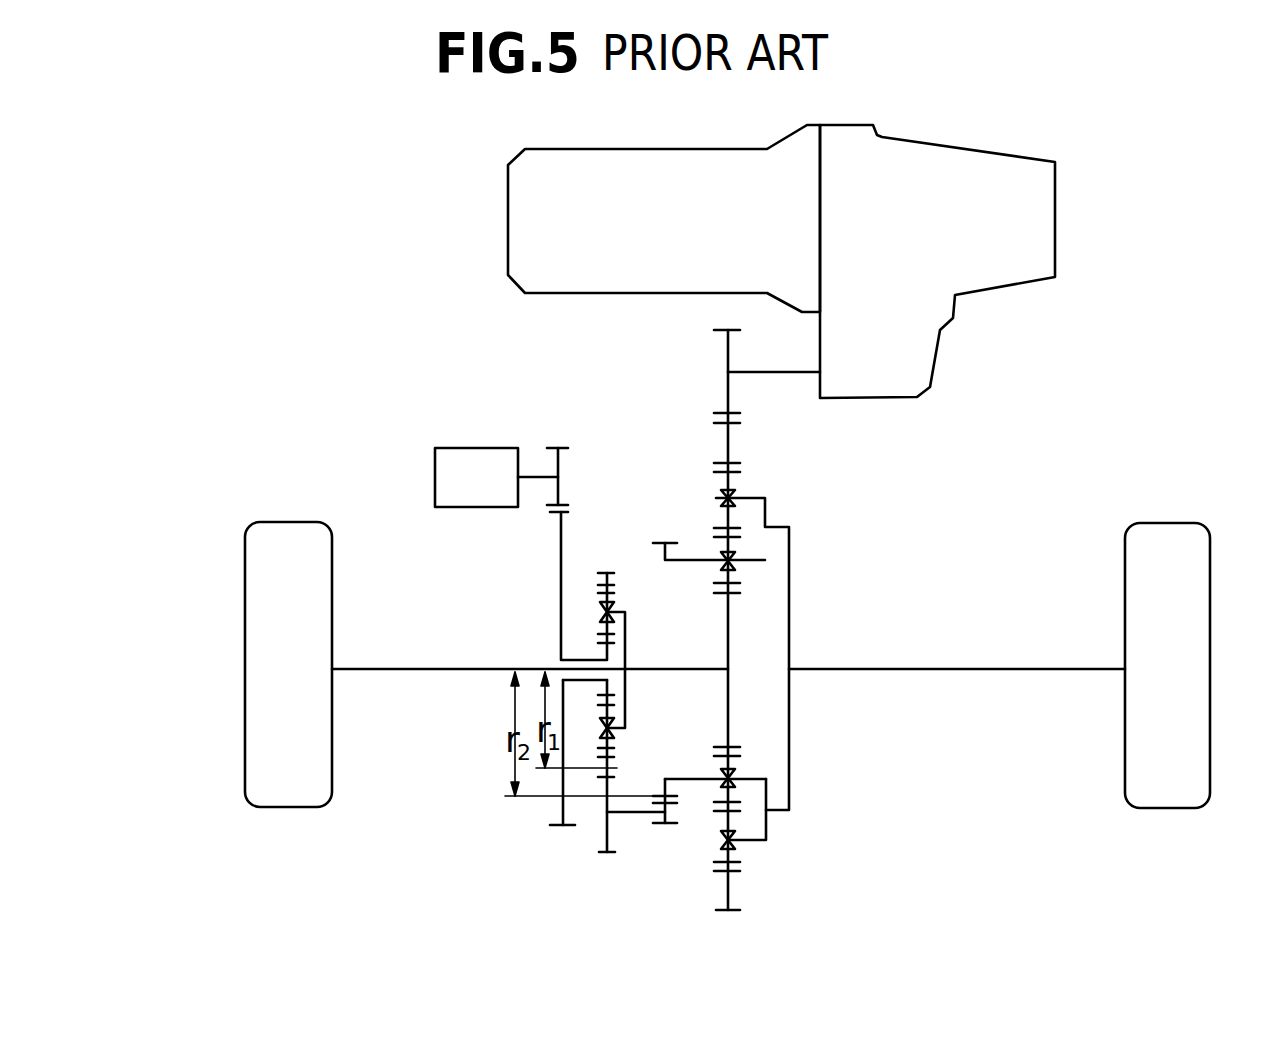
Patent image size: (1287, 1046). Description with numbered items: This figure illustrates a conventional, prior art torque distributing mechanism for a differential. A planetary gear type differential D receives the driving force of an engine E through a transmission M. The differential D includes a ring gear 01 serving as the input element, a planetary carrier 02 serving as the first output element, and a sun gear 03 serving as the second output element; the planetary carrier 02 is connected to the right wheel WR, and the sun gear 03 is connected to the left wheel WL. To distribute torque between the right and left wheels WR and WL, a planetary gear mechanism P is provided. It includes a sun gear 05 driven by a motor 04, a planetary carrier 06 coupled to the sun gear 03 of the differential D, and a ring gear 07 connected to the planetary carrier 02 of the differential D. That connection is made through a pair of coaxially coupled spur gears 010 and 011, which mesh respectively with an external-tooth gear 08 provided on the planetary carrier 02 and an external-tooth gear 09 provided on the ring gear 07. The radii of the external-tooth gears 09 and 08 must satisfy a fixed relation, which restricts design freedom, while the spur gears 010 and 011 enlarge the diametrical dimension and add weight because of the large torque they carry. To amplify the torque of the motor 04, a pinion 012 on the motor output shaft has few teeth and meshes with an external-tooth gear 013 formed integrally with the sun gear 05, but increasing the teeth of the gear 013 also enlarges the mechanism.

The ring gear 01 is at (738, 462).
The planetary carrier 02 is at (792, 552).
The sun gear 03 is at (718, 592).
The motor 04 is at (488, 453).
The sun gear 05 is at (598, 640).
The planetary carrier 06 is at (627, 617).
The ring gear 07 is at (616, 750).
The external-tooth gear 08 is at (678, 788).
The external-tooth gear 09 is at (617, 768).
The spur gear 010 is at (658, 825).
The spur gear 011 is at (607, 850).
The pinion 012 is at (563, 500).
The external-tooth gear 013 is at (553, 513).
The engine E is at (640, 270).
The transmission M is at (970, 263).
The planetary gear type differential D is at (836, 611).
The planetary gear mechanism P is at (548, 638).
The left wheel WL is at (276, 535).
The right wheel WR is at (1162, 530).